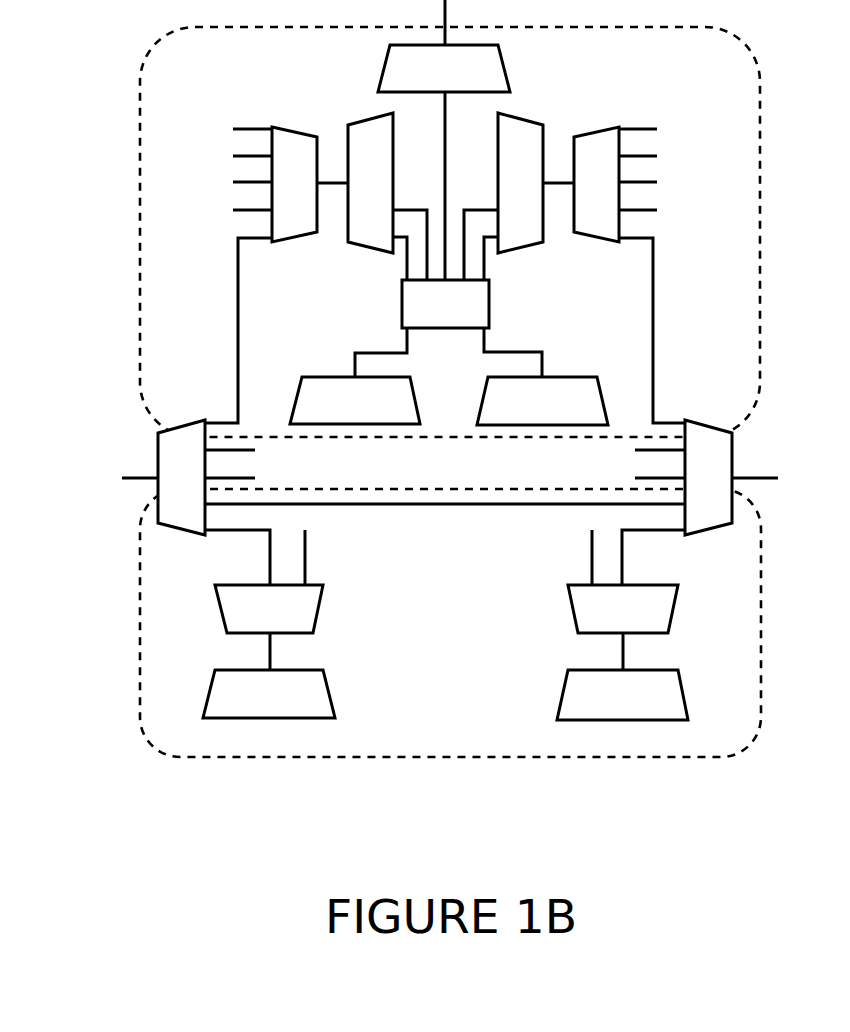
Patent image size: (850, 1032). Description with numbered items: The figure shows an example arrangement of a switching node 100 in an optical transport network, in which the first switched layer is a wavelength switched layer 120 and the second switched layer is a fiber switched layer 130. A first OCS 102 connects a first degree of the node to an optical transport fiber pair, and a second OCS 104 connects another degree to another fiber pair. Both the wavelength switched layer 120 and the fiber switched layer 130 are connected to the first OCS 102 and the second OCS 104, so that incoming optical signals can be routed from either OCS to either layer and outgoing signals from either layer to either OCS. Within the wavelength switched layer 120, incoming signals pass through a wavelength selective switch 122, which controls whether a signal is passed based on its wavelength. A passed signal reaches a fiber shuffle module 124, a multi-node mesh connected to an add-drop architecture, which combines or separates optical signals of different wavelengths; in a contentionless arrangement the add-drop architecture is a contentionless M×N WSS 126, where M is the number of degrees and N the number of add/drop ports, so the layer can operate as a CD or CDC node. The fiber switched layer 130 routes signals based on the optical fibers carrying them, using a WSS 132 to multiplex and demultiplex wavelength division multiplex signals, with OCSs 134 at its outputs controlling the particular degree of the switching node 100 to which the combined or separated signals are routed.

The switching node 100 is at (433, 841).
The first OCS 102 is at (160, 438).
The second OCS 104 is at (722, 447).
The wavelength switched layer 120 is at (450, 232).
The wavelength selective switch 122 is at (353, 243).
The fiber shuffle module 124 is at (402, 300).
The contentionless M×N WSS 126 is at (278, 135).
The fiber switched layer 130 is at (450, 623).
The WSS 132 is at (213, 690).
The OCSs 134 is at (222, 600).